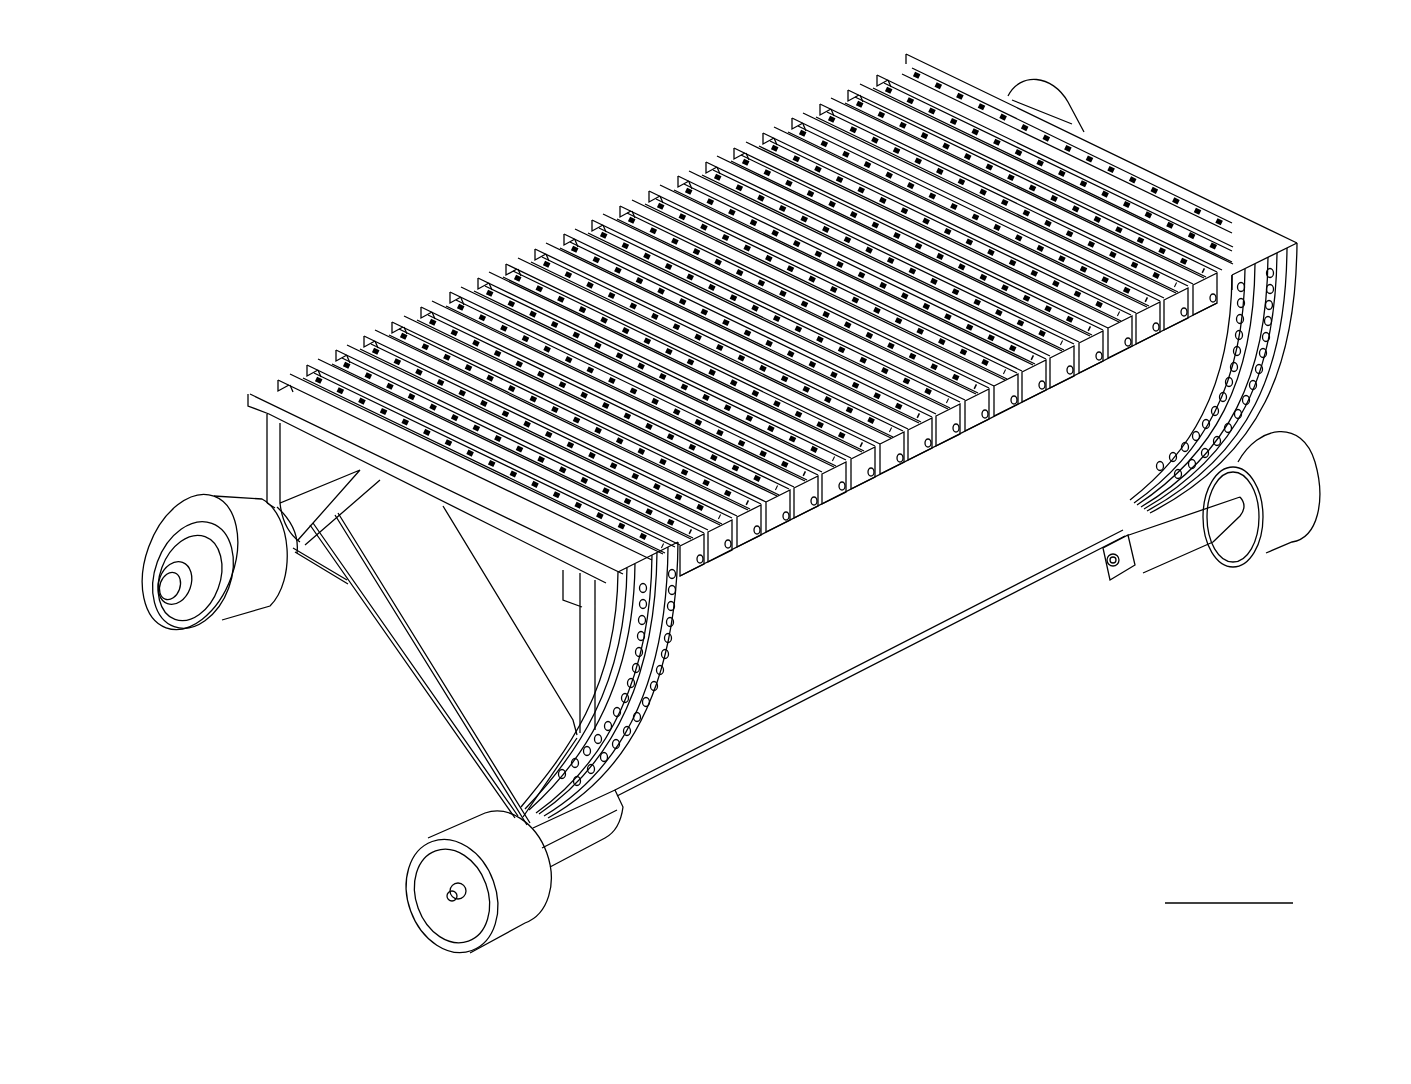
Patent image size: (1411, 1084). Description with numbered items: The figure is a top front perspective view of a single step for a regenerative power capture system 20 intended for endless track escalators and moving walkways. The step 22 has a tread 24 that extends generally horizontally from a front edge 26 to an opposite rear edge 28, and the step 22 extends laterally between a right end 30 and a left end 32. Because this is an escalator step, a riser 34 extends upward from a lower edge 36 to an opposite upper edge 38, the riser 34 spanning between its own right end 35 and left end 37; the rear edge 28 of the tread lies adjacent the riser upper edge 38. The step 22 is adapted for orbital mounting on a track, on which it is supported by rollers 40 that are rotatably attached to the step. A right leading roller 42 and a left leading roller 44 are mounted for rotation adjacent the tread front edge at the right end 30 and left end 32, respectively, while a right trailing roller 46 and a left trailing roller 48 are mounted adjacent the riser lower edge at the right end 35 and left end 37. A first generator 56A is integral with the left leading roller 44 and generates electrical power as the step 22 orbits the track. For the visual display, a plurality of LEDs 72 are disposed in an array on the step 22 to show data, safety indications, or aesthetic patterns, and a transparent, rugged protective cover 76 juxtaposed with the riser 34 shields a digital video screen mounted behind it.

The regenerative power capture system 20 is at (478, 110).
The step 22 is at (313, 353).
The tread 24 is at (410, 310).
The front edge 26 is at (647, 190).
The rear edge 28 is at (1275, 238).
The right end 30 is at (1140, 160).
The left end 32 is at (563, 542).
The riser 34 is at (670, 657).
The right end of riser 35 is at (1280, 380).
The lower edge 36 is at (913, 642).
The left end of riser 37 is at (563, 733).
The upper edge 38 is at (820, 492).
The roller 40 is at (1277, 543).
The right leading roller 42 is at (1063, 102).
The left leading roller 44 is at (262, 595).
The right trailing roller 46 is at (1297, 530).
The left trailing roller 48 is at (535, 890).
The first generator 56A is at (187, 612).
The LEDs 72 is at (727, 160).
The protective cover 76 is at (978, 555).